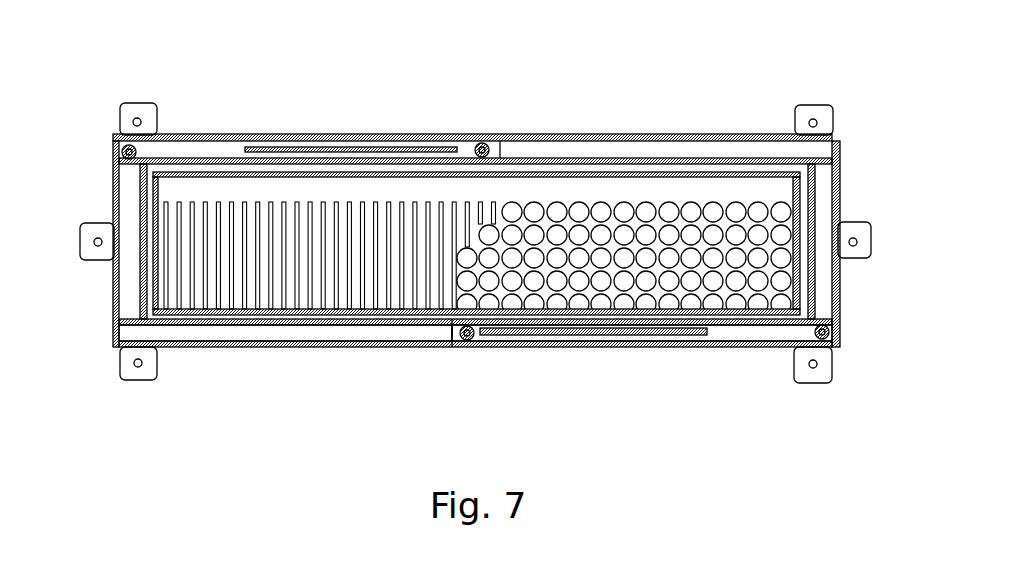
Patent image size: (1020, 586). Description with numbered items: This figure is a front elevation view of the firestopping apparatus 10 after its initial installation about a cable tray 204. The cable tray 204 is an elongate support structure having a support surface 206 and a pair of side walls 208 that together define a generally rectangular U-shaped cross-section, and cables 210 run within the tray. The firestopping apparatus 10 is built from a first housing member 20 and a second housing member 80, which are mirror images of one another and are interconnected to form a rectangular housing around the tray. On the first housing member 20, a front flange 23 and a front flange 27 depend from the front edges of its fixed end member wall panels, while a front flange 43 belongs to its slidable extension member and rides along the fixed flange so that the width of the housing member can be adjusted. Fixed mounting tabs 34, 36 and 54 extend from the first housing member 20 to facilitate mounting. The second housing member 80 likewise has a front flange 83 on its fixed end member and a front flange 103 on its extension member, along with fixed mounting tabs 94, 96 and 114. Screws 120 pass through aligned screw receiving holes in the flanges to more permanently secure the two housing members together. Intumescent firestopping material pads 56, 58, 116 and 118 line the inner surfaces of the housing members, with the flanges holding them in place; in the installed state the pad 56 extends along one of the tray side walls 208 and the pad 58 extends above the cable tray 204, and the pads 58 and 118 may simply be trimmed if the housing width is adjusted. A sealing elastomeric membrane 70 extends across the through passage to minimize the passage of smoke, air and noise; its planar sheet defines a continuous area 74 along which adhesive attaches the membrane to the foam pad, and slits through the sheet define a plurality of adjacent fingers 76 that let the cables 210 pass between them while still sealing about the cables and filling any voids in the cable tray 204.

The firestopping apparatus 10 is at (483, 241).
The first housing member 20 is at (499, 242).
The front flange 23 is at (668, 145).
The front flange 27 is at (828, 283).
The fixed mounting tab 34 is at (826, 110).
The fixed mounting tab 36 is at (875, 242).
The front flange 43 is at (405, 148).
The fixed mounting tab 54 is at (136, 104).
The intumescent firestopping material pad 56 is at (805, 200).
The intumescent firestopping material pad 58 is at (546, 165).
The sealing elastomeric membrane 70 is at (220, 175).
The continuous area 74 is at (297, 190).
The fingers 76 is at (683, 326).
The second housing member 80 is at (249, 367).
The front flange 83 is at (318, 338).
The fixed mounting tab 94 is at (137, 383).
The fixed mounting tab 96 is at (82, 257).
The front flange 103 is at (735, 340).
The fixed mounting tab 114 is at (830, 382).
The intumescent firestopping material pad 116 is at (145, 215).
The intumescent firestopping material pad 118 is at (418, 320).
The screws 120 is at (120, 148).
The cable tray 204 is at (162, 205).
The support surface 206 is at (227, 305).
The side walls 208 is at (793, 187).
The cables 210 is at (630, 300).